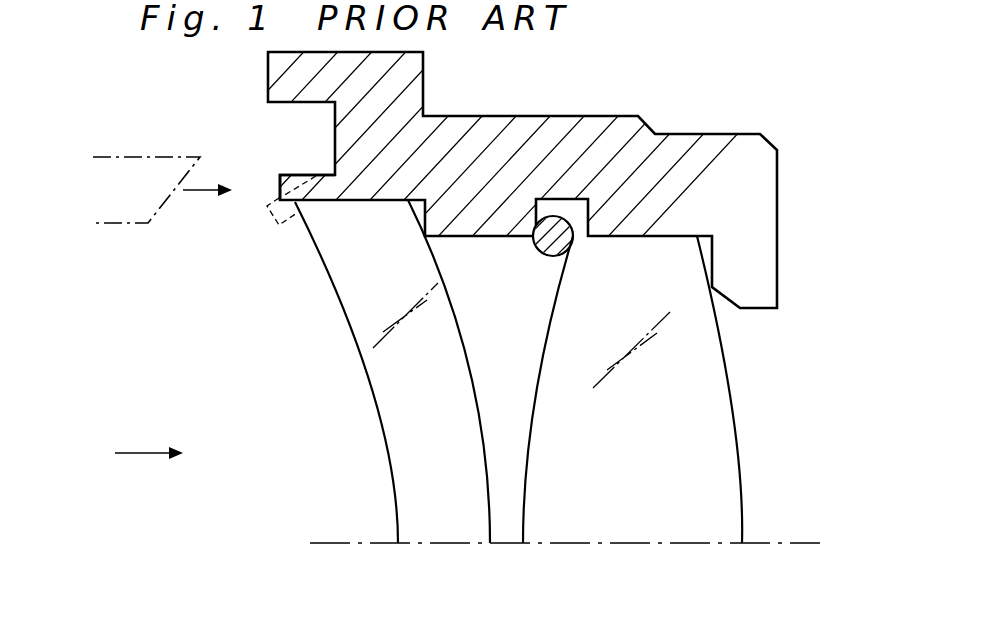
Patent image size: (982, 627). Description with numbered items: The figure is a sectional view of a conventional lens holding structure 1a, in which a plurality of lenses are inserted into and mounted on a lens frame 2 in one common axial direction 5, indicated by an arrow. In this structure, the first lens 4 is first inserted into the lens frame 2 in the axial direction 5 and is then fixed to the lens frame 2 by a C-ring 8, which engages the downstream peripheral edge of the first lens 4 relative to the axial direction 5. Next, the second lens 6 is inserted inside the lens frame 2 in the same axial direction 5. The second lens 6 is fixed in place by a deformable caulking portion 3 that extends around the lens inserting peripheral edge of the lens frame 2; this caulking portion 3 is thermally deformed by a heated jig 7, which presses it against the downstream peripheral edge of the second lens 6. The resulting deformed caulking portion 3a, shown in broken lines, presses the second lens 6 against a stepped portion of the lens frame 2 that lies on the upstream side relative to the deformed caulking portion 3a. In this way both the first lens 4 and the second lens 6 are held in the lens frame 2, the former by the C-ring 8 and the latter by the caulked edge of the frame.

The lens holding structure 1a is at (431, 180).
The lens frame 2 is at (777, 207).
The deformable caulking portion 3 is at (296, 175).
The deformed caulking portion 3a is at (268, 207).
The first lens 4 is at (725, 413).
The axial direction 5 is at (142, 455).
The second lens 6 is at (380, 407).
The heated jig 7 is at (153, 157).
The C-ring 8 is at (538, 253).